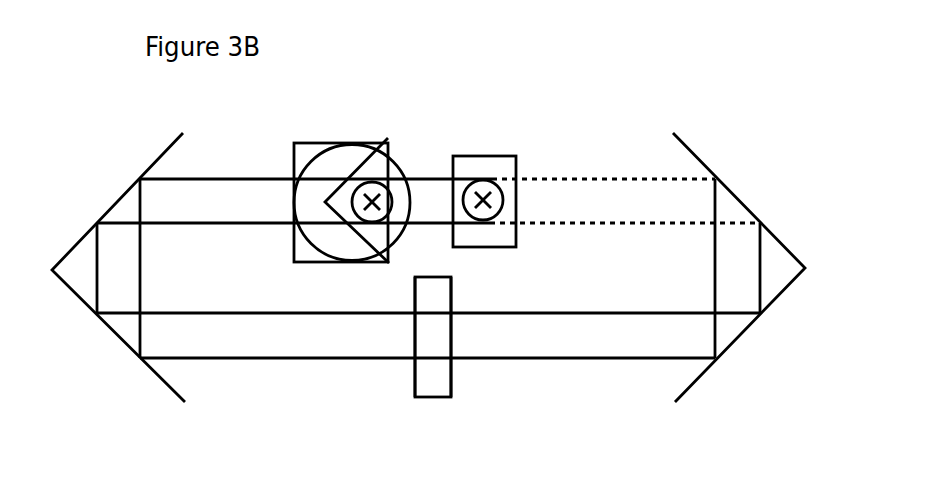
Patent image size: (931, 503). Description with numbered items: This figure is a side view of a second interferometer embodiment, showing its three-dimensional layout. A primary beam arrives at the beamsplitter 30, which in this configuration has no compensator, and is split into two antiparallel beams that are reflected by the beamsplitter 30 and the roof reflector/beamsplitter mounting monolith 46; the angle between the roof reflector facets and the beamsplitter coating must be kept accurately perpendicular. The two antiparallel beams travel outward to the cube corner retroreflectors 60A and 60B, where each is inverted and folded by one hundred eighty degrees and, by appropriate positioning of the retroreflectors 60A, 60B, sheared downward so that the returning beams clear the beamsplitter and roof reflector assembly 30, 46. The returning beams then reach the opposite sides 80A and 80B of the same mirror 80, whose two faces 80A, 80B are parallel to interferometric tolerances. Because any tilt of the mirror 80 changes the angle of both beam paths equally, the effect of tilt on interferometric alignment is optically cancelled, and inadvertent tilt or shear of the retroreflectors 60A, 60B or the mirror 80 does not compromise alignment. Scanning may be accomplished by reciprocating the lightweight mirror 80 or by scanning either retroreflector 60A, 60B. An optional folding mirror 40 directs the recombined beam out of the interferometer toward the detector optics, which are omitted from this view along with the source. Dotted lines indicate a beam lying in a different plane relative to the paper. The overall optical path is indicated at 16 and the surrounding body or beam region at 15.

The optical body / substrate 15 is at (200, 360).
The optical path (beam) 16 is at (595, 178).
The beamsplitter 30 is at (393, 155).
The folding mirror 40 is at (509, 155).
The roof reflector/beamsplitter mounting monolith 46 is at (312, 142).
The cube corner retroreflector 60A is at (127, 190).
The cube corner retroreflector 60B is at (725, 352).
The mirror 80 is at (432, 400).
The first face of mirror 80A is at (415, 385).
The second face of mirror 80B is at (452, 378).